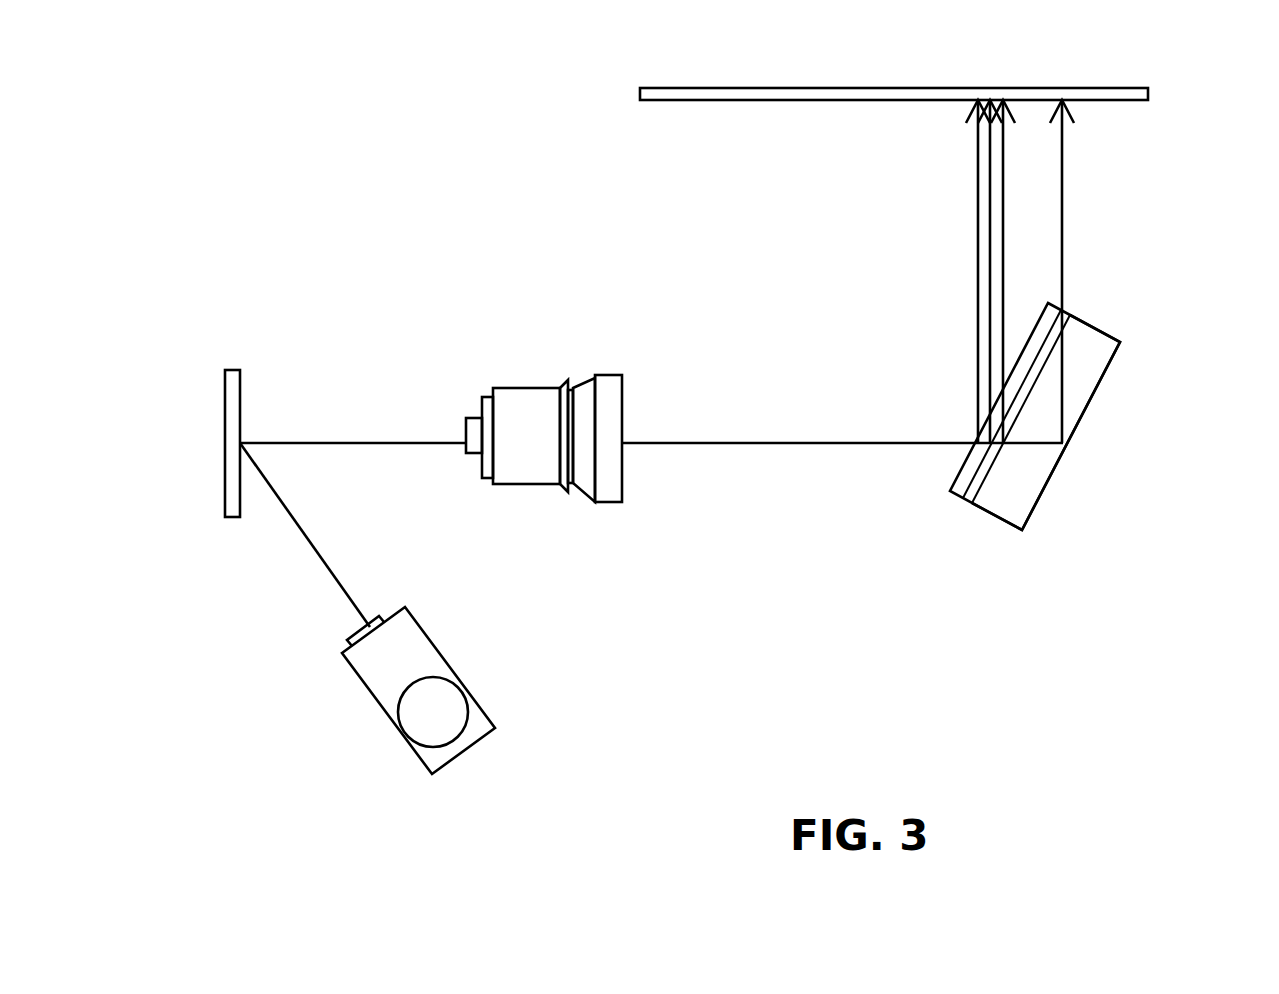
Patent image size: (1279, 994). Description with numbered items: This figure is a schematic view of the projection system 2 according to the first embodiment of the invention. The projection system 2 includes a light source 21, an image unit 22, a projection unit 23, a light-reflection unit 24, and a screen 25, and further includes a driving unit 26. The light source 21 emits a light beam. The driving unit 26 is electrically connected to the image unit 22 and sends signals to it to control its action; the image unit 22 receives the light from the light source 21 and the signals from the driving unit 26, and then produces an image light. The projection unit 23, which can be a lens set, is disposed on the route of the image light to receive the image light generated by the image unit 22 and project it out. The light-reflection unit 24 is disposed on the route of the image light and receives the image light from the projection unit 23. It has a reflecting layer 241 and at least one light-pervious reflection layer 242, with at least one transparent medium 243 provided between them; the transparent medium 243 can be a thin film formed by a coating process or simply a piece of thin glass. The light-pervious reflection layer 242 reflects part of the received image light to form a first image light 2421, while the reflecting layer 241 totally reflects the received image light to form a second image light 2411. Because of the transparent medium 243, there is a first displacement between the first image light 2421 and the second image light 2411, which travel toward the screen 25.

The projection system 2 is at (92, 134).
The light source 21 is at (420, 725).
The image unit 22 is at (237, 410).
The projection unit 23 is at (520, 420).
The light-reflection unit 24 is at (1093, 504).
The reflecting layer 241 is at (1058, 455).
The light-pervious reflection layer 242 is at (1070, 320).
The transparent medium 243 is at (1077, 390).
The second image light 2411 is at (1062, 222).
The first image light 2421 is at (1003, 242).
The screen 25 is at (1118, 93).
The driving unit 26 is at (418, 690).